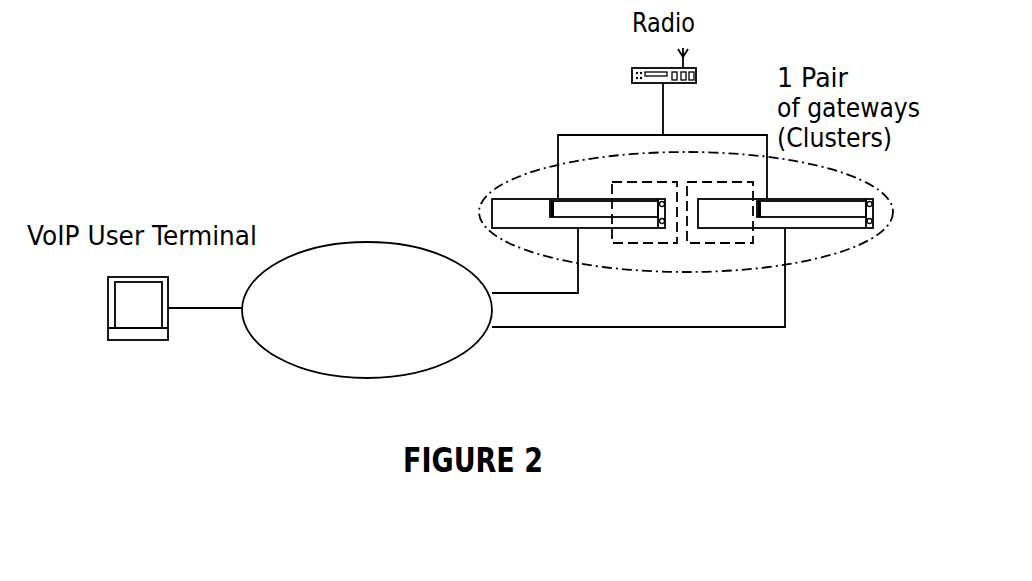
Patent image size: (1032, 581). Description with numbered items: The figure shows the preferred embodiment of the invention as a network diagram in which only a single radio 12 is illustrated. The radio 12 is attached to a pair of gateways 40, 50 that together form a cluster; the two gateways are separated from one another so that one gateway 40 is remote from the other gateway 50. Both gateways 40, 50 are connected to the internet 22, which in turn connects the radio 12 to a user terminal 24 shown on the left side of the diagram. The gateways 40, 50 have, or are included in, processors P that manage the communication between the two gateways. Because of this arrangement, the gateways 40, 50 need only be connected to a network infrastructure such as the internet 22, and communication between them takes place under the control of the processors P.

The radio 12 is at (632, 85).
The internet 22 is at (355, 263).
The user terminal 24 is at (147, 318).
The gateway 40 is at (510, 210).
The gateway 50 is at (830, 220).
The processors P is at (652, 235).